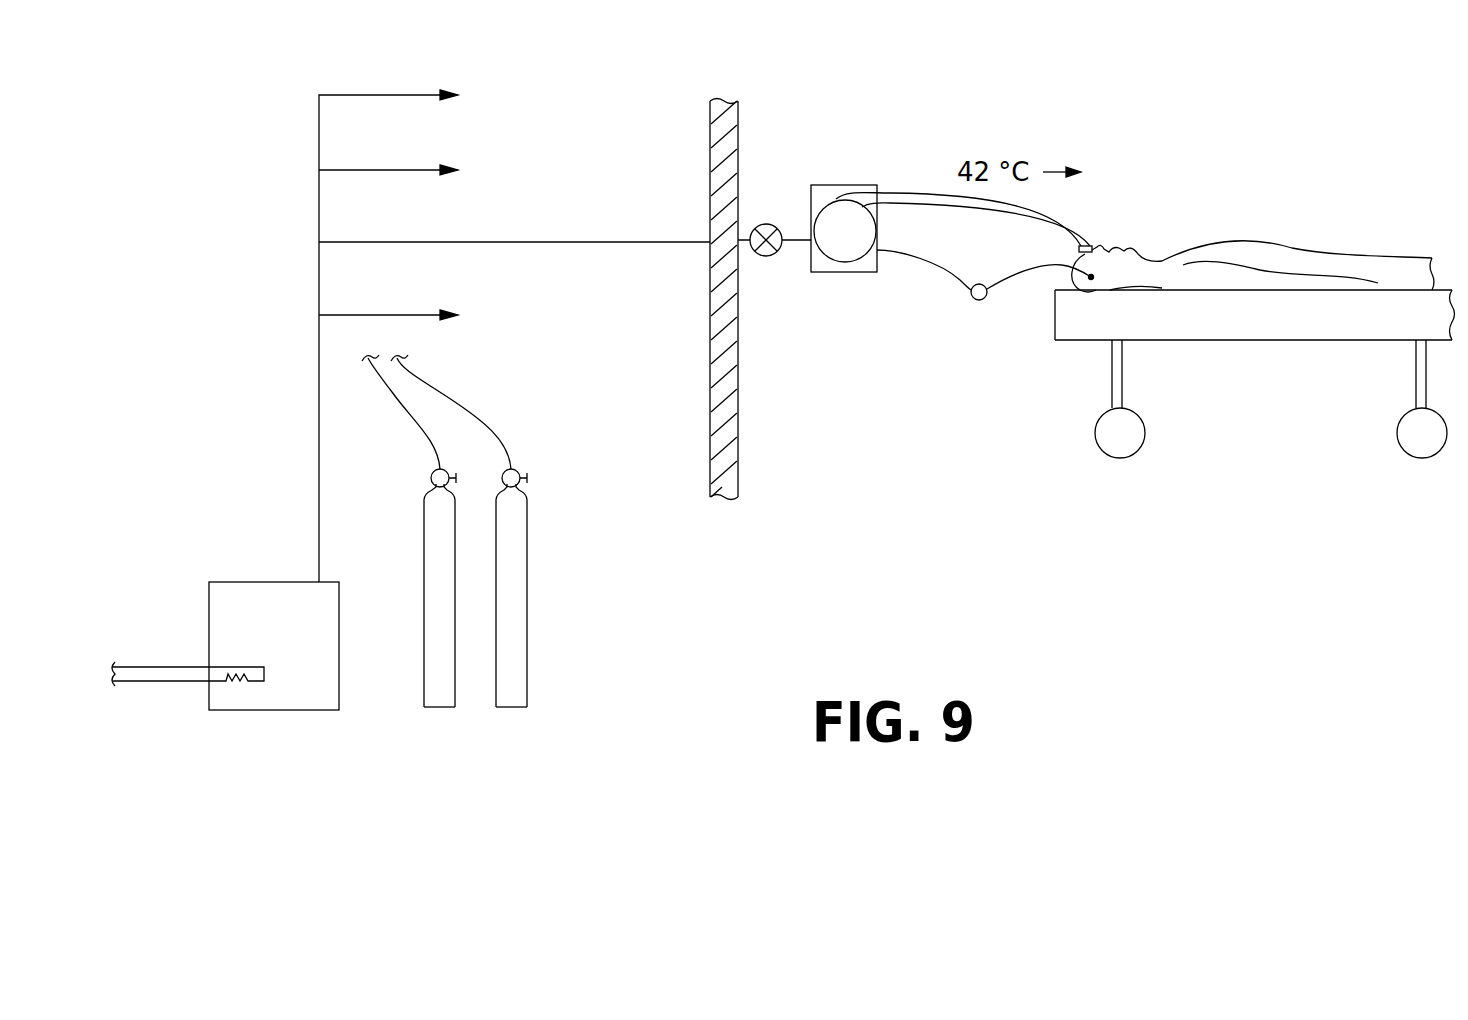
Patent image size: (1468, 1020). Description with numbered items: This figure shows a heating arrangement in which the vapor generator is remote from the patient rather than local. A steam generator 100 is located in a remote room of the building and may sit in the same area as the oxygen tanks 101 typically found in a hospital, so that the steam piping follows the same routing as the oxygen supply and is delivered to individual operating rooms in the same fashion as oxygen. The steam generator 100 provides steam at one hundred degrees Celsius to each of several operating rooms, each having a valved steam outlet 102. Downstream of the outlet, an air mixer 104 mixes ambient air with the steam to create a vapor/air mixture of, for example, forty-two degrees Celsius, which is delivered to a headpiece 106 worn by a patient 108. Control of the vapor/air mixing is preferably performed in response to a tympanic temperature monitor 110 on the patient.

The steam generator 100 is at (249, 582).
The oxygen tanks 101 is at (440, 707).
The valved steam outlet 102 is at (766, 257).
The air mixer 104 is at (838, 185).
The headpiece 106 is at (1097, 244).
The patient 108 is at (1252, 238).
The tympanic temperature monitor 110 is at (1011, 282).